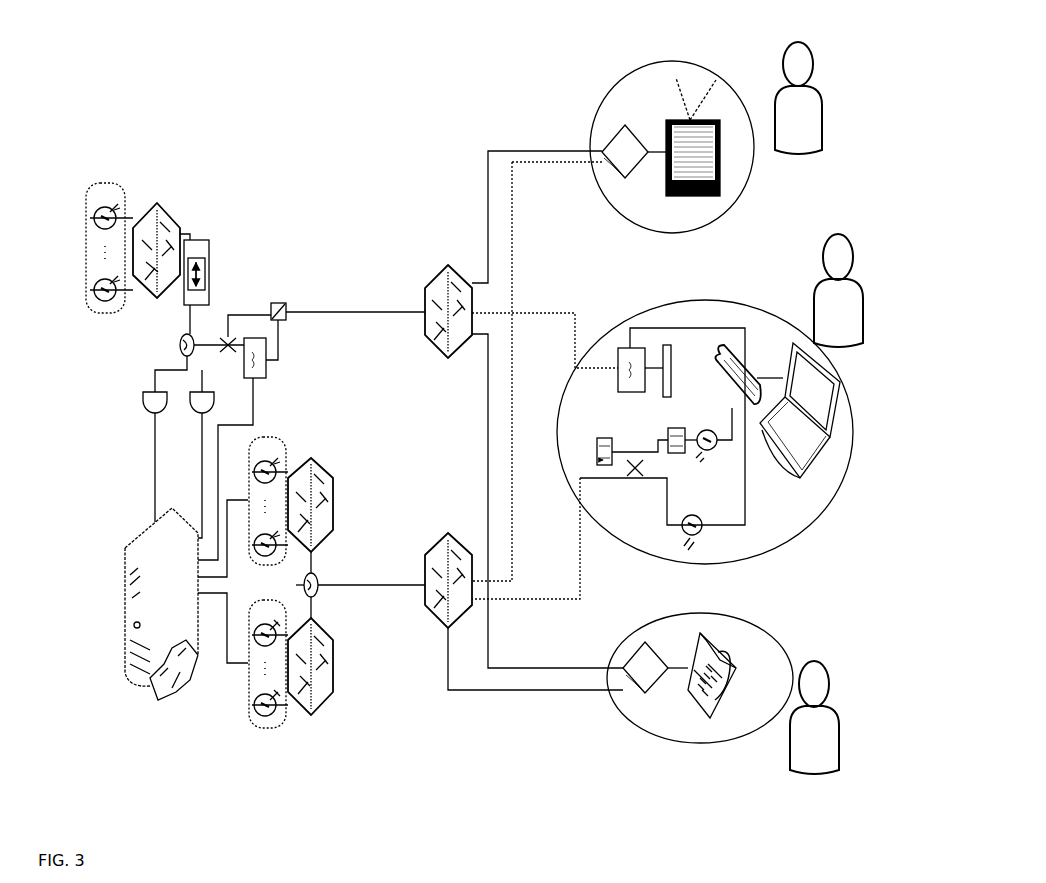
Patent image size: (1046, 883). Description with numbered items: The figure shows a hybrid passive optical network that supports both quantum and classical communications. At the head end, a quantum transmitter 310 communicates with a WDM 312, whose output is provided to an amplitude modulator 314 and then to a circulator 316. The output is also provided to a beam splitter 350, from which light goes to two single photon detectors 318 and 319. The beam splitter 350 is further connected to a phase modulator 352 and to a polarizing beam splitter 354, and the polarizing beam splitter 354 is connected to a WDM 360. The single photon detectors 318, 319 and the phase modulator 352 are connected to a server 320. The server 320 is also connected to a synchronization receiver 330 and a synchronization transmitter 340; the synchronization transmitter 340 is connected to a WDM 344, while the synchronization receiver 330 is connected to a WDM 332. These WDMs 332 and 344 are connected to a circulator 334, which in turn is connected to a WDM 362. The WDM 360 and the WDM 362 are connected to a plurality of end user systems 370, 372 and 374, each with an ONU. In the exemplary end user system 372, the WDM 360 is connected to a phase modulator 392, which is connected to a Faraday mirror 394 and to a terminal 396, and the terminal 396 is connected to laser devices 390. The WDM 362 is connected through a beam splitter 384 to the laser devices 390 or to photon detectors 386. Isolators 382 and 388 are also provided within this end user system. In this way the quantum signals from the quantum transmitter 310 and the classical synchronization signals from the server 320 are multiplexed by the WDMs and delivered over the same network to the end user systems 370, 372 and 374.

The quantum transmitter 310 is at (92, 323).
The WDM 312 is at (171, 203).
The amplitude modulator 314 is at (214, 252).
The circulator 316 is at (177, 346).
The single photon detector 318 is at (151, 428).
The single photon detector 319 is at (202, 432).
The server 320 is at (161, 614).
The synchronization receiver 330 is at (264, 731).
The WDM 332 is at (327, 680).
The circulator 334 is at (321, 590).
The synchronization transmitter 340 is at (278, 436).
The WDM 344 is at (340, 509).
The beam splitter 350 is at (234, 338).
The phase modulator 352 is at (268, 362).
The polarizing beam splitter 354 is at (294, 316).
The WDM 360 is at (448, 362).
The WDM 362 is at (437, 620).
The end user system 370 is at (648, 83).
The end user system 372 is at (709, 300).
The end user system 374 is at (757, 640).
The isolator 382 is at (594, 452).
The beam splitter 384 is at (623, 484).
The photon detector 386 is at (686, 536).
The isolator 388 is at (681, 482).
The laser device 390 is at (705, 428).
The phase modulator 392 is at (612, 356).
The Faraday mirror 394 is at (666, 343).
The terminal 396 is at (752, 375).